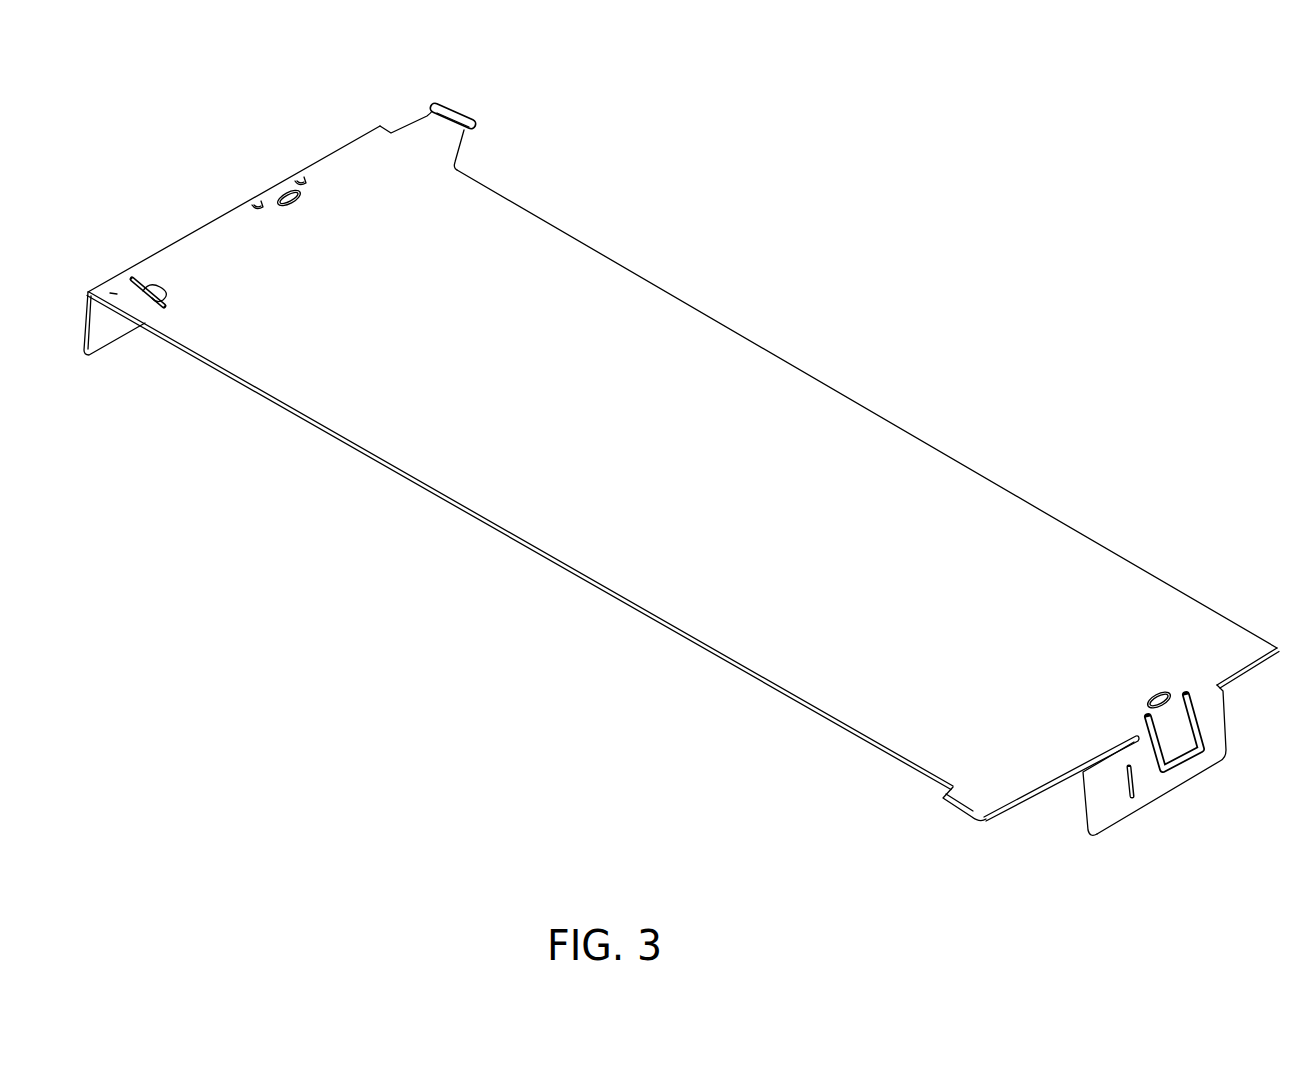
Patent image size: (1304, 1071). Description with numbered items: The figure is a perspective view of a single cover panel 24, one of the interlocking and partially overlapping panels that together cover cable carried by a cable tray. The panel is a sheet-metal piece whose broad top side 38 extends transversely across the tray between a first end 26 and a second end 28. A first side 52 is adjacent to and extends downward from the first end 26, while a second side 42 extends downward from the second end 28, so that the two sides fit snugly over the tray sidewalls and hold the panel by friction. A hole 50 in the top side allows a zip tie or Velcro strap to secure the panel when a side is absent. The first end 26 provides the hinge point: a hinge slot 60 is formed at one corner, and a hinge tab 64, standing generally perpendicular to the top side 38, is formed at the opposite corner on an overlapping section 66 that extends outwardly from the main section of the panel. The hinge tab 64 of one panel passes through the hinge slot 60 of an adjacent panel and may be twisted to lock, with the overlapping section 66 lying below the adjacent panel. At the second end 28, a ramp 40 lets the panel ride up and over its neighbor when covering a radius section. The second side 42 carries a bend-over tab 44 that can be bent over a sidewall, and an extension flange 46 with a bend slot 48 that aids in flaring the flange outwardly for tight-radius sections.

The cover panel 24 is at (953, 322).
The first end 26 is at (220, 237).
The second end 28 is at (1008, 778).
The top side 38 is at (768, 552).
The ramp 40 is at (958, 815).
The second side 42 is at (1219, 731).
The bend-over tab 44 is at (1189, 768).
The extension flange 46 is at (1084, 806).
The bend slot 48 is at (1133, 792).
The hole 50 is at (284, 192).
The first side 52 is at (350, 135).
The hinge slot 60 is at (142, 306).
The hinge tab 64 is at (457, 113).
The overlapping section 66 is at (442, 139).